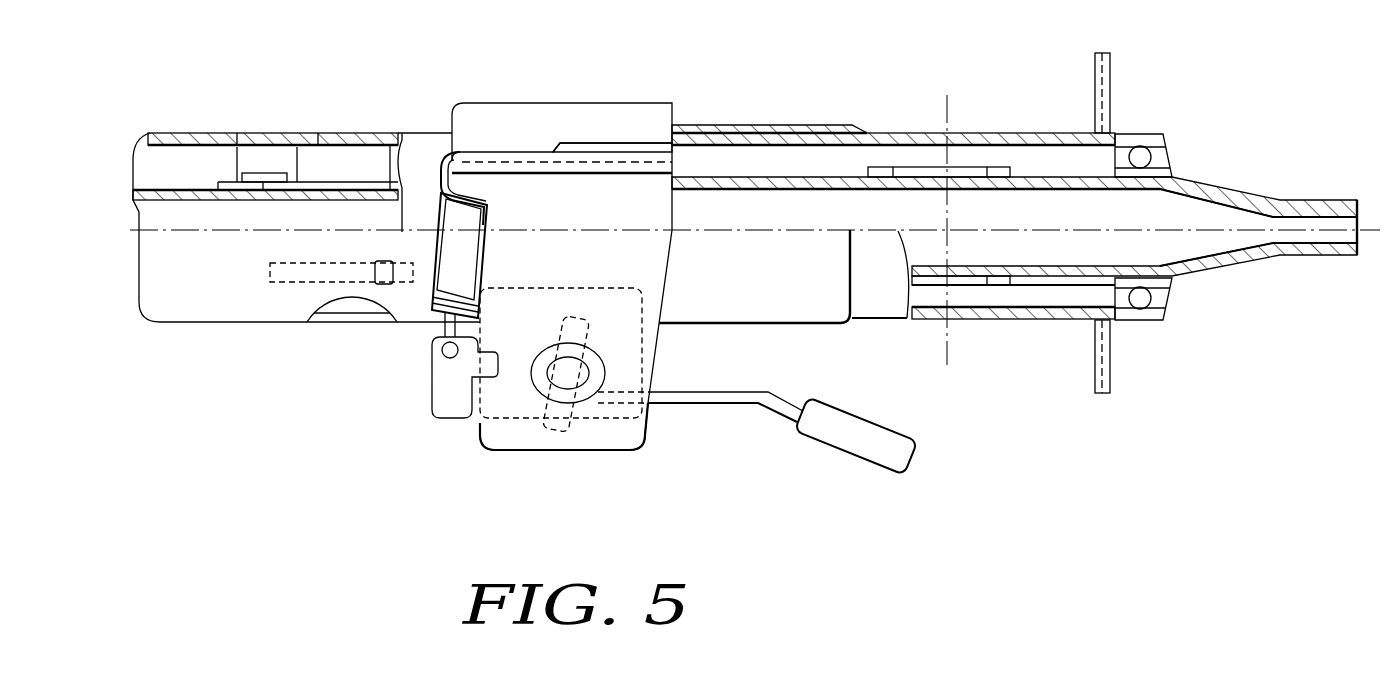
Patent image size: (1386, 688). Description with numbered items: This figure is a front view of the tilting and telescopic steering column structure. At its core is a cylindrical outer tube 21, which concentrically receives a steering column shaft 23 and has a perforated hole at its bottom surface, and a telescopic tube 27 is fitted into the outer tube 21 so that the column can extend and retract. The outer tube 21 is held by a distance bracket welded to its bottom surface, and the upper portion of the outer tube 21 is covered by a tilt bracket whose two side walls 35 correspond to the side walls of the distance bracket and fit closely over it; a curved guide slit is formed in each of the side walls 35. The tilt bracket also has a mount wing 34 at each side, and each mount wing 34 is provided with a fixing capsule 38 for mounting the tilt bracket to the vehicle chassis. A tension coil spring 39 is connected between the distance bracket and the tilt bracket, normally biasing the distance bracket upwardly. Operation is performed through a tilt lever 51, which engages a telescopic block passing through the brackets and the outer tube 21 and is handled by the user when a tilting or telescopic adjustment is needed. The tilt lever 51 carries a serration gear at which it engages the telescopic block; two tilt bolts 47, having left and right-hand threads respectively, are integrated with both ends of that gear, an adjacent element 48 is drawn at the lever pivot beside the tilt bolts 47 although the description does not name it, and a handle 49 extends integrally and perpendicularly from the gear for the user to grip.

The outer tube 21 is at (786, 125).
The steering column shaft 23 is at (1231, 185).
The telescopic tube 27 is at (992, 133).
The mount wing 34 is at (512, 150).
The side wall 35 is at (487, 440).
The fixing capsule 38 is at (598, 143).
The tension coil spring 39 is at (455, 208).
The tilt bolt 47 is at (585, 392).
The knob ring 48 is at (548, 393).
The handle 49 is at (890, 455).
The tilt lever 51 is at (757, 405).